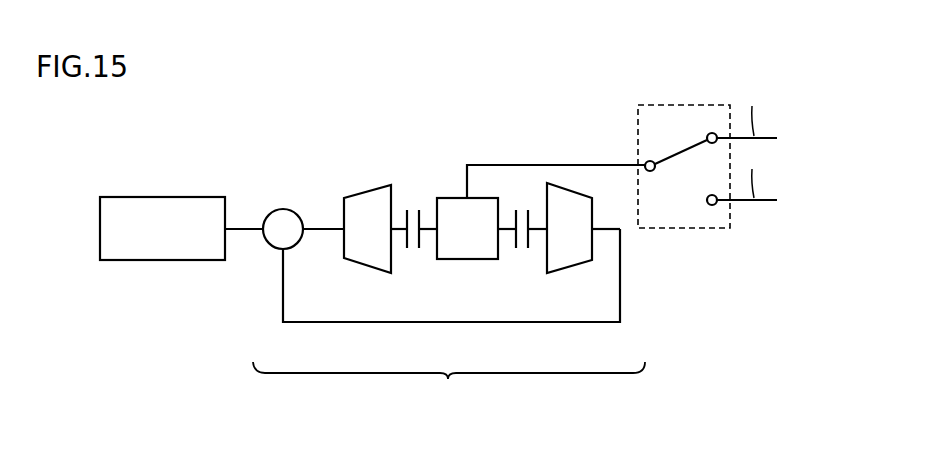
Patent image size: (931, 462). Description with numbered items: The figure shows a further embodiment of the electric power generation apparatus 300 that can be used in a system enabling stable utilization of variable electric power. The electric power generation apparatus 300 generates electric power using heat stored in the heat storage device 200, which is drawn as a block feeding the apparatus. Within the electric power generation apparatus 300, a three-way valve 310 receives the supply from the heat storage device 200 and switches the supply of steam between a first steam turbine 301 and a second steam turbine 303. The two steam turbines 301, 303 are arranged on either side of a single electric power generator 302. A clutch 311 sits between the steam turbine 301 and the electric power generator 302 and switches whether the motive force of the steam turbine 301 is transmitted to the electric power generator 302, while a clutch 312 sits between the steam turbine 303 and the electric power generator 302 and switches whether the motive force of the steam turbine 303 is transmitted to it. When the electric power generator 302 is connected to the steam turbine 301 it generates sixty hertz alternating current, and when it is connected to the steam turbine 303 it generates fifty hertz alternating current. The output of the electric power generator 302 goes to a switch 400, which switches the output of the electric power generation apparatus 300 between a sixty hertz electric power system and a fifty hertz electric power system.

The heat storage device 200 is at (160, 260).
The electric power generation apparatus 300 is at (449, 386).
The steam turbine 301 is at (372, 193).
The electric power generator 302 is at (452, 196).
The steam turbine 303 is at (568, 187).
The three-way valve 310 is at (284, 208).
The clutch 311 is at (413, 252).
The clutch 312 is at (521, 252).
The switch 400 is at (679, 230).